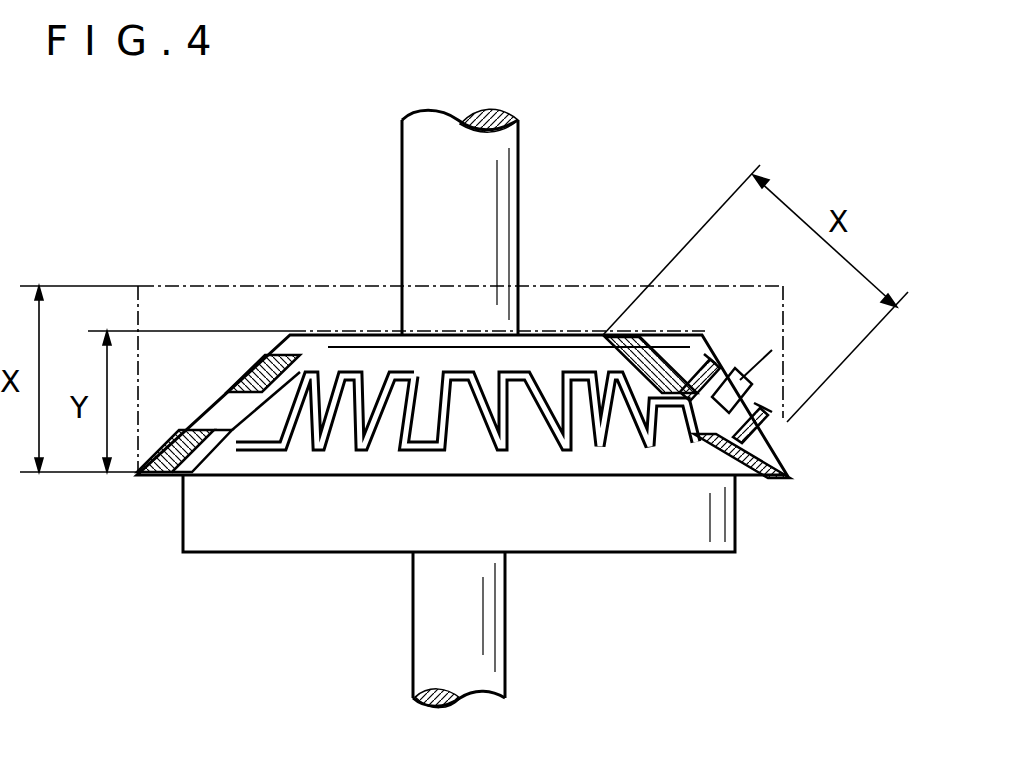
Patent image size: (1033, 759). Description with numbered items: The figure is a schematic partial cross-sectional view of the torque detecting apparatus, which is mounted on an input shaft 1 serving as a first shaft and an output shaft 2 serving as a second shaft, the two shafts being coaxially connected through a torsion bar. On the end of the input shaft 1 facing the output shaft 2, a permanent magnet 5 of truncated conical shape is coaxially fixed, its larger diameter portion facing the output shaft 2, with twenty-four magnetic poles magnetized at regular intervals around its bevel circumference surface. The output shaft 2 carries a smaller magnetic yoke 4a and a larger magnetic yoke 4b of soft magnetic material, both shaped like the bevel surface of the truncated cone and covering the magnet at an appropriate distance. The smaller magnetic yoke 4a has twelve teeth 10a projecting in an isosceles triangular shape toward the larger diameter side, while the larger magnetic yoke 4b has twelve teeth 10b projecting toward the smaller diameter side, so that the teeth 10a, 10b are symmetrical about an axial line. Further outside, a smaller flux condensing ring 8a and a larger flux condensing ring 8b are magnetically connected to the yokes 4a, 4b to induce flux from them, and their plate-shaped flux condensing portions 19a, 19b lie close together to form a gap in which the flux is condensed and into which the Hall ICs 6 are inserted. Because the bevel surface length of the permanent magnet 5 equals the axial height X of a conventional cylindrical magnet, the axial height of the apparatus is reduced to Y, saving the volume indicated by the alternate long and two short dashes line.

The input shaft 1 is at (508, 160).
The output shaft 2 is at (478, 666).
The smaller magnetic yoke 4a is at (340, 347).
The larger magnetic yoke 4b is at (232, 476).
The permanent magnet 5 is at (464, 420).
The Hall IC 6 is at (753, 376).
The smaller flux condensing ring 8a is at (263, 357).
The larger flux condensing ring 8b is at (170, 440).
The teeth 10a is at (358, 387).
The teeth 10b is at (330, 442).
The flux condensing portion 19a is at (690, 368).
The flux condensing portion 19b is at (787, 424).